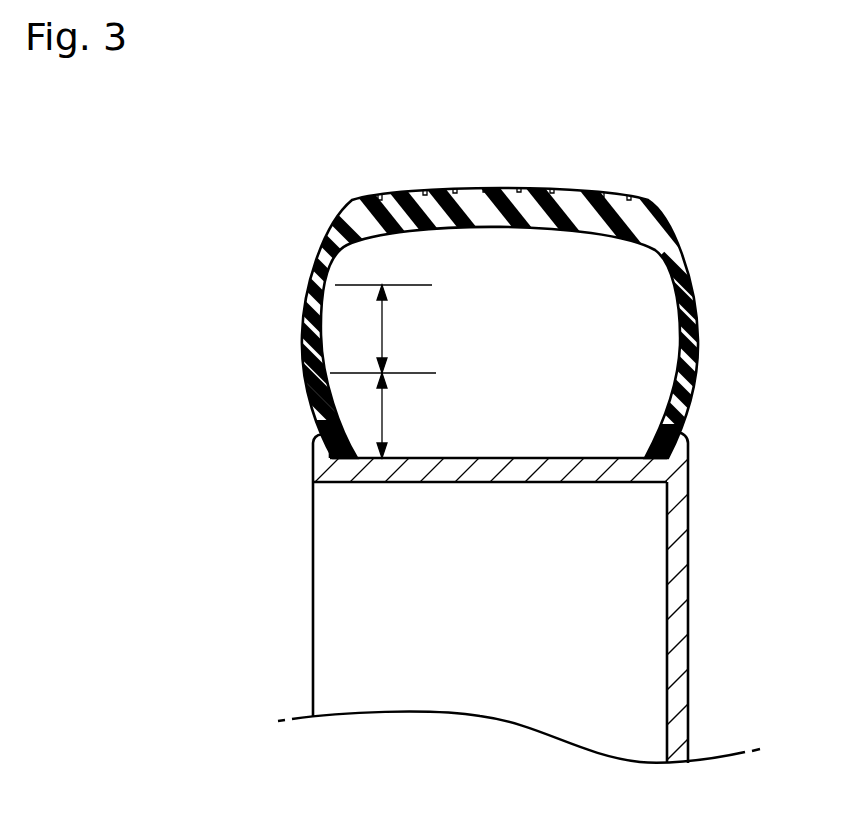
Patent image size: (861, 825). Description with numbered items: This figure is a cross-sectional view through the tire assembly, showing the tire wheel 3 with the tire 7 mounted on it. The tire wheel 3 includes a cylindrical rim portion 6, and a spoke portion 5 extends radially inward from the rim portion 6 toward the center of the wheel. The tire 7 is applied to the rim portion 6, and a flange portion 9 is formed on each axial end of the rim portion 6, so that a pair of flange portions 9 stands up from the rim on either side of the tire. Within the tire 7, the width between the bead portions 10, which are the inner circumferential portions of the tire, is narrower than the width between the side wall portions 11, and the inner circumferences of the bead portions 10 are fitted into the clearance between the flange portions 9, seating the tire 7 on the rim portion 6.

The tire wheel 3 is at (747, 519).
The spoke portion 5 is at (684, 646).
The rim portion 6 is at (482, 470).
The tire 7 is at (566, 198).
The flange portion 9 is at (322, 451).
The bead portion 10 is at (383, 415).
The side wall portion 11 is at (383, 329).